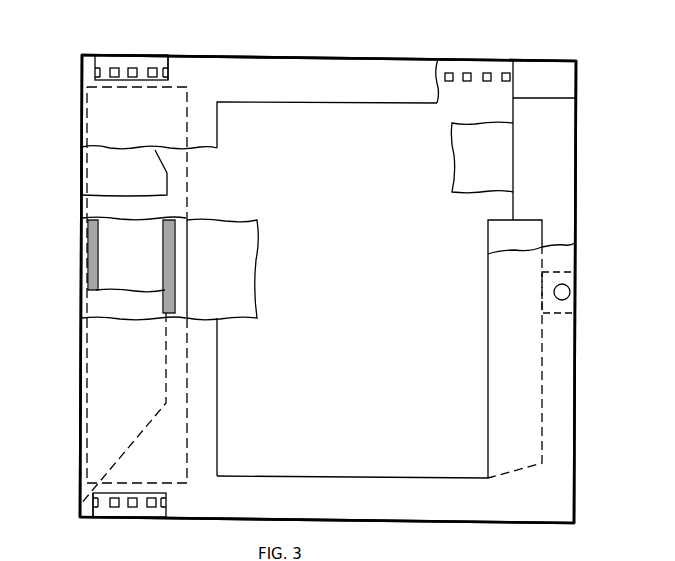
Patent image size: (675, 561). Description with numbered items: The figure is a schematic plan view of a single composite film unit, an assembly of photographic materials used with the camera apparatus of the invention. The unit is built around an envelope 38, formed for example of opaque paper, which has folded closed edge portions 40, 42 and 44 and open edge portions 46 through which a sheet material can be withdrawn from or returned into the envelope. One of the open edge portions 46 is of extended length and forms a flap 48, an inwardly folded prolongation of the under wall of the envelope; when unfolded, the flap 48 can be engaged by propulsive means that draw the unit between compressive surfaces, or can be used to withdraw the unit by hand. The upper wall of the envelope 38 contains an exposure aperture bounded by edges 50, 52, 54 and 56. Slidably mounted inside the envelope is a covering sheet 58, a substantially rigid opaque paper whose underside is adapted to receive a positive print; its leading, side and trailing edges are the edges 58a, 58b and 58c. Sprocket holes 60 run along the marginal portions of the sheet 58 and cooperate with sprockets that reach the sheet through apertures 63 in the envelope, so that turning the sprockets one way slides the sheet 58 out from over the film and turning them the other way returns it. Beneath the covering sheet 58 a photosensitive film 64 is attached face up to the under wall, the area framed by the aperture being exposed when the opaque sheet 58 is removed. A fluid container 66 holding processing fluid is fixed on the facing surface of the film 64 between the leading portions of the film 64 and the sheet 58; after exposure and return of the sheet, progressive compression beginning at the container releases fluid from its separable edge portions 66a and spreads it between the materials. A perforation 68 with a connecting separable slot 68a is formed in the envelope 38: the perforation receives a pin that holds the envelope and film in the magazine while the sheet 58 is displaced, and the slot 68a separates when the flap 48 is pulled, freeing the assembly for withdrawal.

The envelope 38 is at (558, 403).
The folded closed edge portion 40 is at (305, 58).
The folded closed edge portion 42 is at (577, 338).
The folded closed edge portion 44 is at (473, 523).
The open edge portion 46 is at (82, 378).
The flap 48 is at (108, 297).
The aperture edge 50 is at (218, 362).
The aperture edge 52 is at (318, 103).
The aperture edge 54 is at (488, 323).
The aperture edge 56 is at (370, 476).
The covering sheet 58 is at (355, 270).
The leading edge of sheet 58a is at (82, 202).
The side edge of sheet 58b is at (489, 58).
The trailing edge of sheet 58c is at (516, 103).
The sprocket holes 60 is at (131, 68).
The apertures 63 is at (157, 58).
The photosensitive film 64 is at (228, 285).
The fluid container 66 is at (135, 255).
The separable edge portions 66a is at (189, 241).
The perforation 68 is at (556, 290).
The separable slot 68a is at (568, 300).